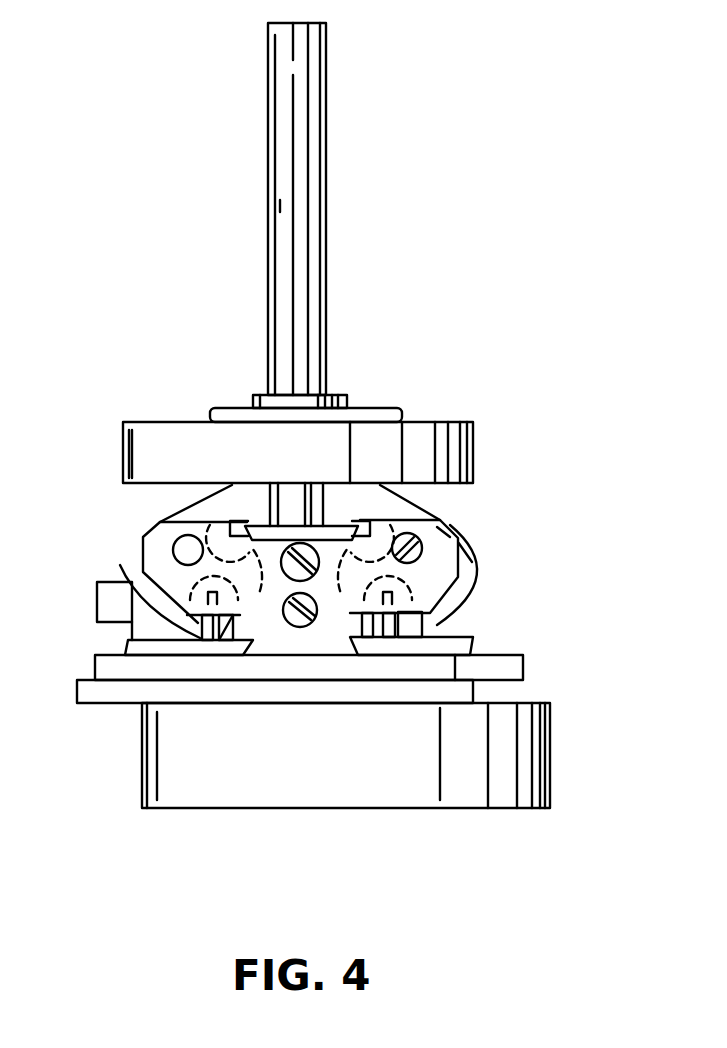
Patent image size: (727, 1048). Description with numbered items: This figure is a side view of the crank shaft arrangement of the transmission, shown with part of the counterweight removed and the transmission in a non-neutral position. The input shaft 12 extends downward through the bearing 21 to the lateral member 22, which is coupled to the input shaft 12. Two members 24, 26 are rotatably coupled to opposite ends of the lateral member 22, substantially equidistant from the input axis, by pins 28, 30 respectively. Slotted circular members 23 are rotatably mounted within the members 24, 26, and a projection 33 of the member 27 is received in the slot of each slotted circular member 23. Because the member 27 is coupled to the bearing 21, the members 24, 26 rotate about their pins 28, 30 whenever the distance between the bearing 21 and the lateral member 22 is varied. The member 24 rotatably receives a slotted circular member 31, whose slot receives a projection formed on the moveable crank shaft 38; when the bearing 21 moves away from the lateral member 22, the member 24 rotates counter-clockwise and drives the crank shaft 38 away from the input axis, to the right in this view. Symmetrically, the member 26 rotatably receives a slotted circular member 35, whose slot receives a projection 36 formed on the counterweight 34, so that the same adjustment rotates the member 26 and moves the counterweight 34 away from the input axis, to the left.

The input shaft 12 is at (313, 122).
The member 27 is at (268, 402).
The bearing 21 is at (370, 412).
The projection 33 is at (262, 500).
The slotted circular members 23 is at (218, 490).
The member 24 is at (143, 563).
The pin 28 is at (183, 550).
The counterweight 34 is at (112, 601).
The slotted circular member 31 is at (160, 603).
The lateral member 22 is at (445, 520).
The pin 30 is at (418, 556).
The member 26 is at (472, 585).
The projection 36 is at (422, 617).
The slotted circular member 35 is at (400, 640).
The moveable crank shaft 38 is at (220, 790).